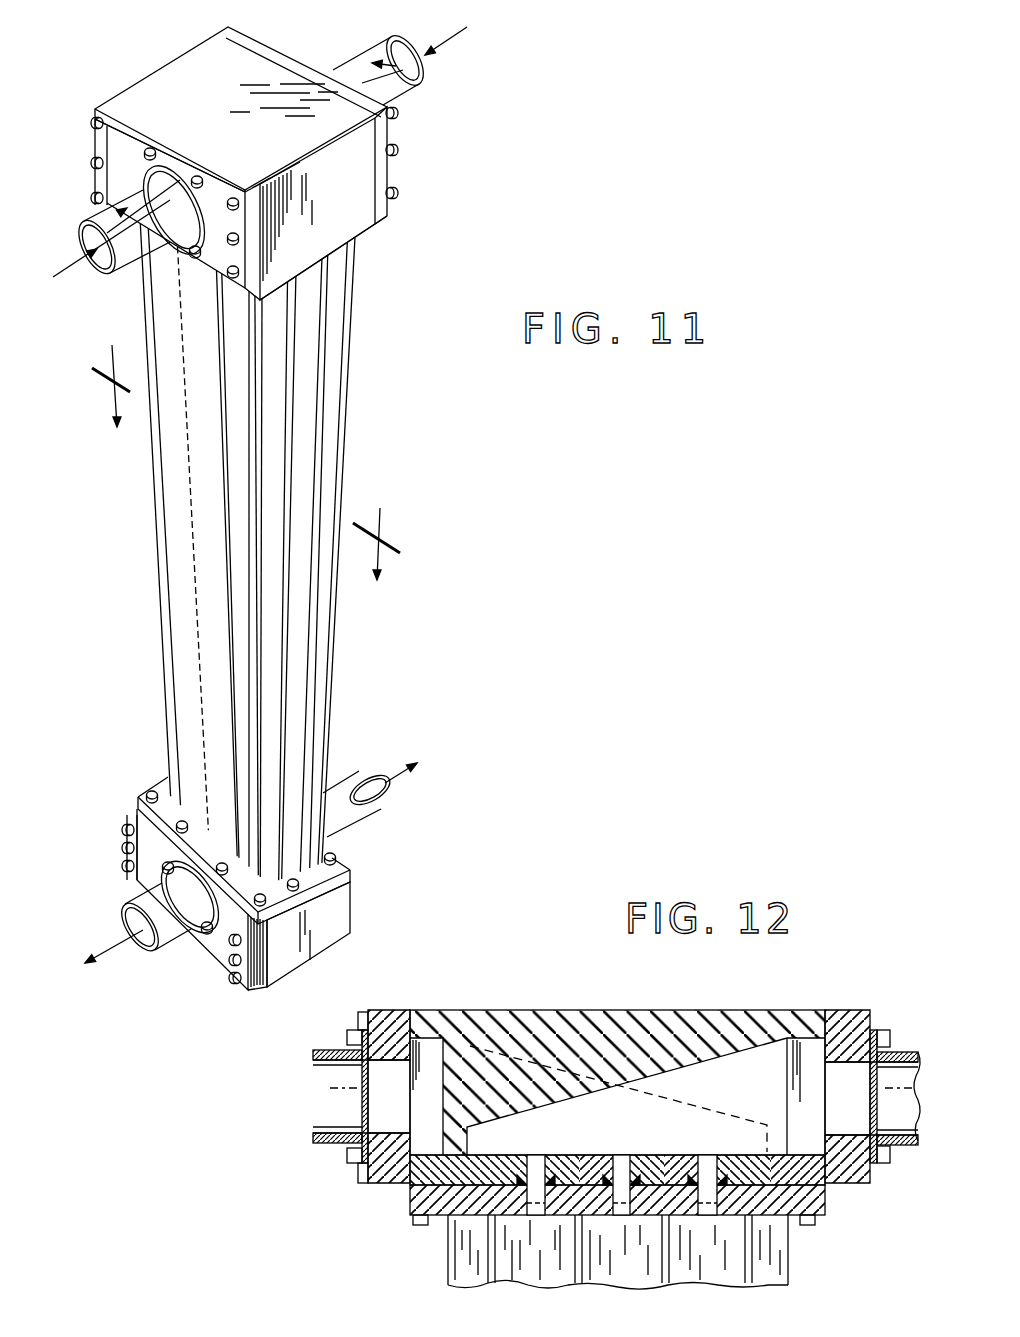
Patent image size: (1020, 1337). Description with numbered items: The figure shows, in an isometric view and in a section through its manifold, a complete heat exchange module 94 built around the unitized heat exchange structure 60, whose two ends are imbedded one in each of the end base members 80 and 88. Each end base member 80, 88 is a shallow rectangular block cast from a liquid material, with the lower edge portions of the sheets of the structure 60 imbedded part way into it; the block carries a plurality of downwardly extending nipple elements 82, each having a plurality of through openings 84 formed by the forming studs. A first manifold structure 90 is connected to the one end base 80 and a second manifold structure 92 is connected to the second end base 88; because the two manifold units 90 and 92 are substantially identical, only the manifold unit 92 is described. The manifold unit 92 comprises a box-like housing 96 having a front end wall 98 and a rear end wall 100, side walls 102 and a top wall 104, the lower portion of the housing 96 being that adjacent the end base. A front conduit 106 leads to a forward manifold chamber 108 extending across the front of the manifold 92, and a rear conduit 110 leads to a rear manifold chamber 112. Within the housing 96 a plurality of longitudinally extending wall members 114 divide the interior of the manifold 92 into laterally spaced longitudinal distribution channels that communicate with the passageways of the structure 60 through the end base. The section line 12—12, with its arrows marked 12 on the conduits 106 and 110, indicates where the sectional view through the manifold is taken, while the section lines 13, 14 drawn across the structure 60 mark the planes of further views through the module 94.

In FIG. 11, the section line 12— 12 is at (257, 141).
In FIG. 11, the section line 13— 13 is at (93, 386).
In FIG. 11, the section line 14 is at (394, 551).
In FIG. 12, the unitized heat exchange structure 60 is at (788, 1267).
In FIG. 11, the end base member 80 is at (330, 880).
In FIG. 12, the nipple elements 82 is at (517, 1163).
In FIG. 12, the through openings 84 is at (623, 1158).
In FIG. 11, the end base member 88 is at (367, 227).
In FIG. 12, the end base member 88 is at (413, 1207).
In FIG. 11, the first manifold structure 90 is at (352, 907).
In FIG. 11, the second manifold structure 92 is at (387, 167).
In FIG. 12, the second manifold structure 92 is at (522, 983).
In FIG. 11, the heat exchange module 94 is at (355, 434).
In FIG. 12, the box-like housing 96 is at (685, 1012).
In FIG. 11, the end wall 98 is at (107, 143).
In FIG. 12, the end wall 98 is at (397, 1012).
In FIG. 11, the end wall 100 is at (302, 68).
In FIG. 12, the end wall 100 is at (847, 1017).
In FIG. 11, the side walls 102 is at (367, 143).
In FIG. 11, the top wall 104 is at (223, 104).
In FIG. 11, the front conduit 106 is at (122, 270).
In FIG. 12, the front conduit 106 is at (325, 1145).
In FIG. 12, the forward manifold chamber 108 is at (437, 1057).
In FIG. 11, the rear conduit 110 is at (350, 790).
In FIG. 12, the rear conduit 110 is at (907, 1147).
In FIG. 12, the rear manifold chamber 112 is at (812, 1050).
In FIG. 12, the longitudinally extending wall members 114 is at (730, 1073).